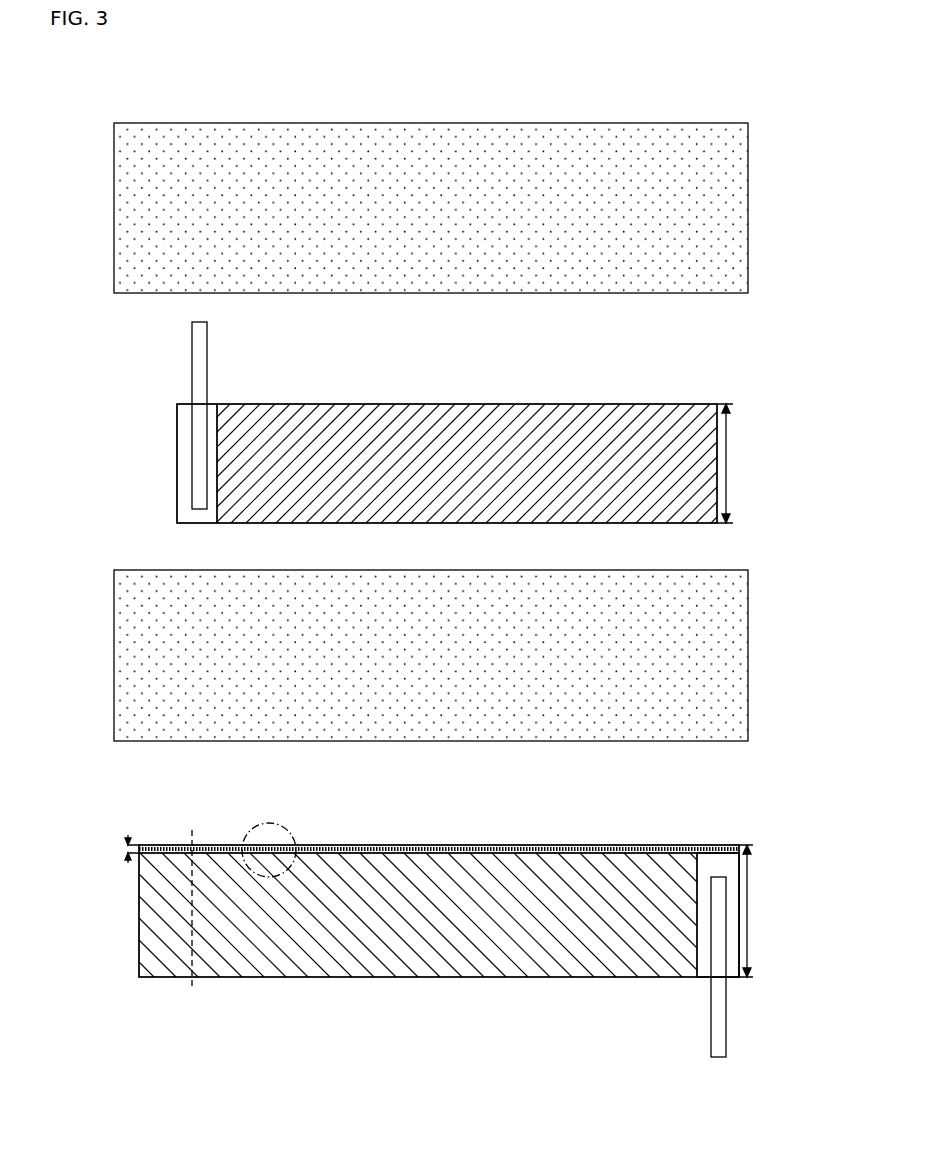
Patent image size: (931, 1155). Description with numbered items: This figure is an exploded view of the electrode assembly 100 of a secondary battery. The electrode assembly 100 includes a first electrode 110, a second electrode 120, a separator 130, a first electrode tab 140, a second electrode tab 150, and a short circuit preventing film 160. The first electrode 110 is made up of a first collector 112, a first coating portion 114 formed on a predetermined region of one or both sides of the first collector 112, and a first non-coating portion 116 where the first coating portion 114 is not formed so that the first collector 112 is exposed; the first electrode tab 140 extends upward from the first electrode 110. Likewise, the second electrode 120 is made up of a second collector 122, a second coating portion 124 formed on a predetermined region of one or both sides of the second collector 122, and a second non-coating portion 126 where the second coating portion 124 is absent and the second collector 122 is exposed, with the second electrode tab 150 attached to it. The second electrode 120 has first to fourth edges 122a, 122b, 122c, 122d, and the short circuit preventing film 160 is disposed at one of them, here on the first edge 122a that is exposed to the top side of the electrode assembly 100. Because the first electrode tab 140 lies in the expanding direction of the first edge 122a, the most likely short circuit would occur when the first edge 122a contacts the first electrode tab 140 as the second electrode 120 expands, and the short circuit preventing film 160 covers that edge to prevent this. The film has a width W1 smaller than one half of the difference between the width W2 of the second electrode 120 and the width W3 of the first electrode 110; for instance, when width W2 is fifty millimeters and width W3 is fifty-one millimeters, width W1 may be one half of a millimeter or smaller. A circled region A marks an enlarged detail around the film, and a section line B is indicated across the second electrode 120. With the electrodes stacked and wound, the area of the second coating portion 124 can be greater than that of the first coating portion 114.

The electrode assembly 100 is at (110, 105).
The first electrode 110 is at (167, 378).
The first collector 112 is at (453, 404).
The first coating portion 114 is at (303, 415).
The first non-coating portion 116 is at (212, 407).
The second electrode 120 is at (128, 823).
The second collector 122 is at (139, 884).
The first edge 122a is at (393, 821).
The second edge 122b is at (393, 986).
The third edge 122c is at (128, 927).
The fourth edge 122d is at (760, 915).
The second coating portion 124 is at (485, 872).
The second non-coating portion 126 is at (720, 860).
The separator 130 is at (395, 123).
The first electrode tab 140 is at (199, 342).
The second electrode tab 150 is at (715, 1012).
The short circuit preventing film 160 is at (400, 847).
The width of the short circuit preventing film W1 is at (125, 848).
The width of the second electrode W2 is at (753, 893).
The width of the first electrode W3 is at (731, 470).
The enlarged region A is at (290, 828).
The section line B-B' B is at (190, 911).